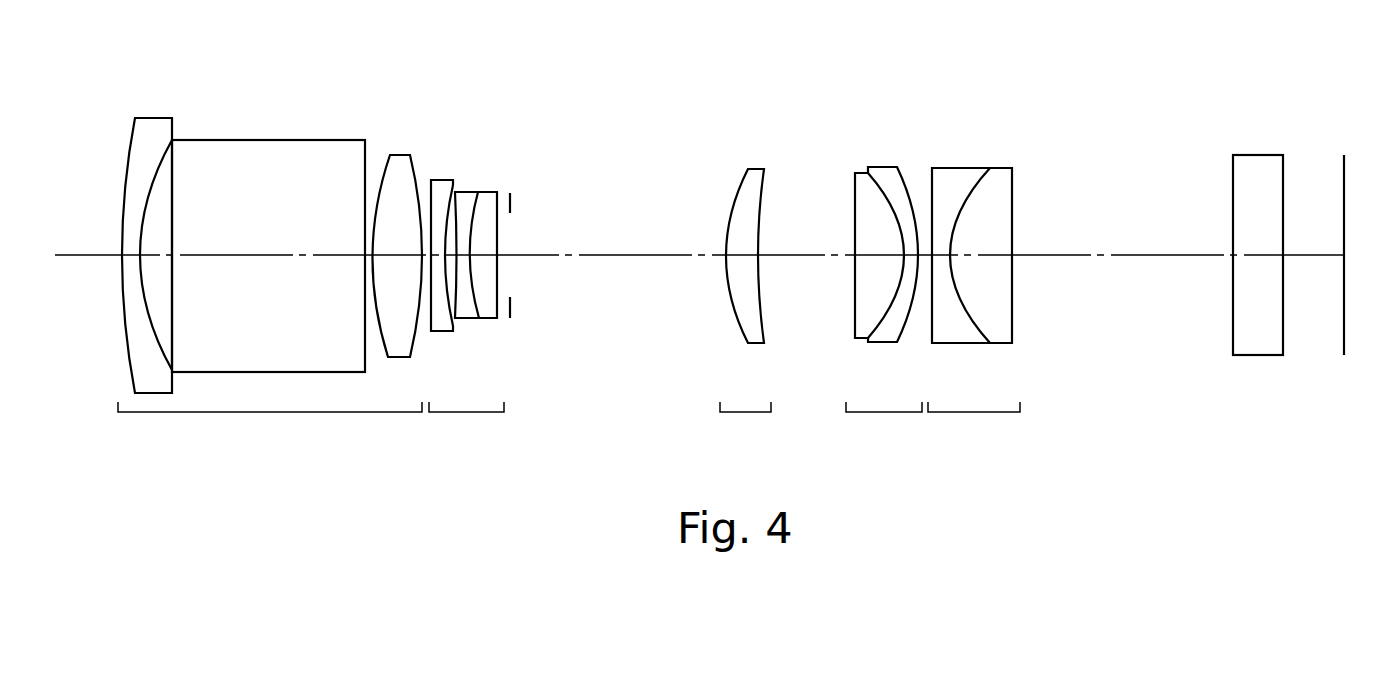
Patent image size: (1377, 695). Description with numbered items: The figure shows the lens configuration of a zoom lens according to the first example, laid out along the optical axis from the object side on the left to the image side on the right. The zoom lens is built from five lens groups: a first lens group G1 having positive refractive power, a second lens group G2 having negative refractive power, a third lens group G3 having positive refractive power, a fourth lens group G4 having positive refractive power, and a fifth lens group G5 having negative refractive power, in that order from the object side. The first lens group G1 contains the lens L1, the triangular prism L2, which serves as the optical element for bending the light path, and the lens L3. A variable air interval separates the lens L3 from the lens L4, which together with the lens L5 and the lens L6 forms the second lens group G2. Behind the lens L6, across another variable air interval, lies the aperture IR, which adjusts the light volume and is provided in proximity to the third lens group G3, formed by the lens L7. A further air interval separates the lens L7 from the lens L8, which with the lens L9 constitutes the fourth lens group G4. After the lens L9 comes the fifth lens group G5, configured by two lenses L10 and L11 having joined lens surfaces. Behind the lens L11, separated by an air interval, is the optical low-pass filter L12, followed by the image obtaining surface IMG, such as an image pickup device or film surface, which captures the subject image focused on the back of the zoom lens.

The lens L1 is at (152, 118).
The triangular prism L2 is at (255, 140).
The lens L3 is at (398, 155).
The lens L4 is at (442, 180).
The lens L5 is at (470, 192).
The lens L6 is at (488, 192).
The lens L7 is at (757, 169).
The lens L8 is at (863, 173).
The lens L9 is at (882, 167).
The lens L10 is at (963, 168).
The lens L11 is at (1002, 168).
The optical low-pass filter L12 is at (1257, 155).
The aperture IR is at (513, 203).
The image obtaining surface IMG is at (1345, 155).
The first lens group G1 is at (270, 240).
The second lens group G2 is at (498, 260).
The third lens group G3 is at (745, 268).
The fourth lens group G4 is at (877, 272).
The fifth lens group G5 is at (982, 269).